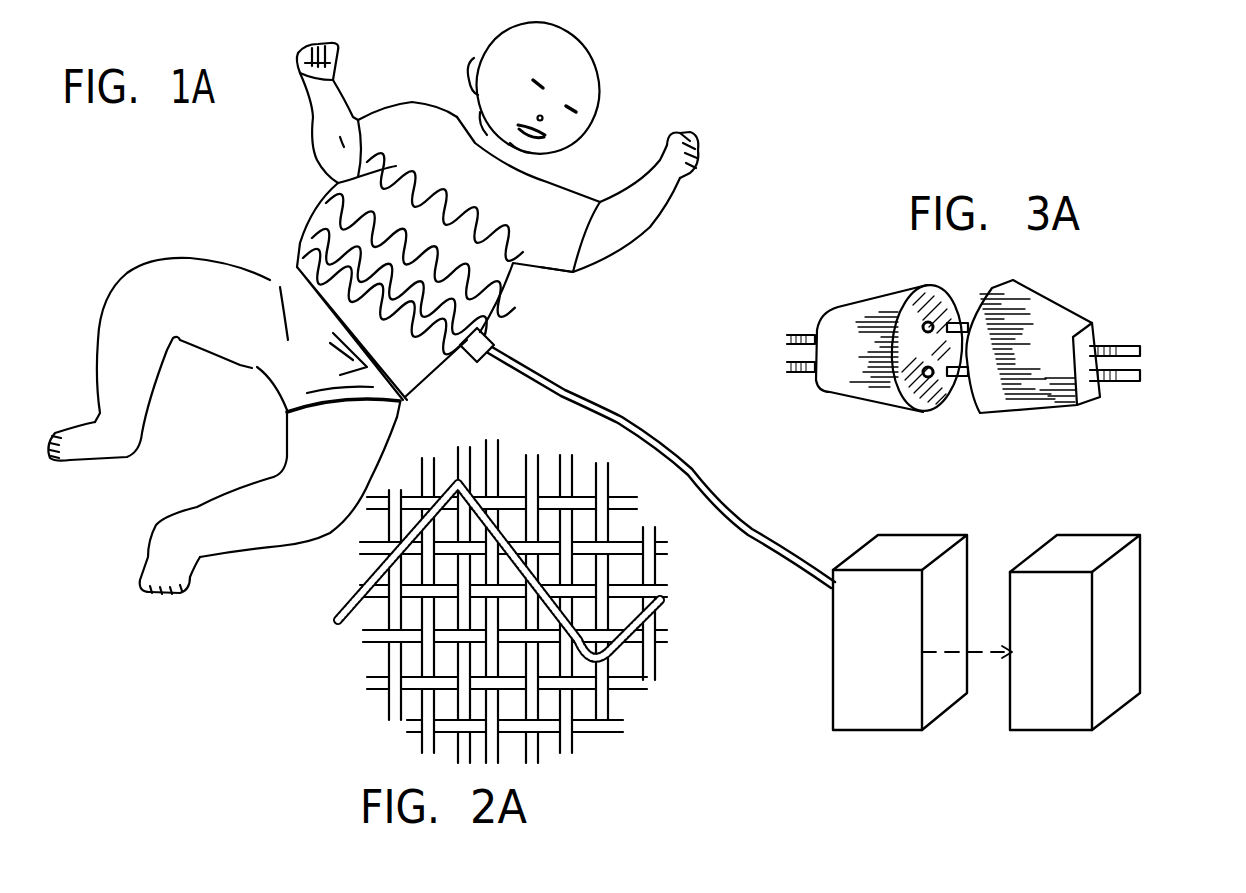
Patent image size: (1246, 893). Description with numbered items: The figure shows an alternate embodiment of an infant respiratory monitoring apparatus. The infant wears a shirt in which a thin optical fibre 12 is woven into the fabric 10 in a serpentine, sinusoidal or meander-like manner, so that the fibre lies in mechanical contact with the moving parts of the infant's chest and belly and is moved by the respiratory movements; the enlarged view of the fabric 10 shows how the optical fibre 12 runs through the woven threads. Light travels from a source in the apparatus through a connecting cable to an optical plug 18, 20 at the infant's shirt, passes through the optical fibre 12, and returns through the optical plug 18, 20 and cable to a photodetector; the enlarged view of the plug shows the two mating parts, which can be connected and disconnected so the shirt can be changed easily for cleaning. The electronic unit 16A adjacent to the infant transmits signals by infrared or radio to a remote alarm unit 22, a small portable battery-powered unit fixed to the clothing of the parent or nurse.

In FIG. 2A, the fabric 10 is at (640, 660).
In FIG. 1A, the optical fibre 12 is at (322, 218).
In FIG. 2A, the optical fibre 12 is at (368, 573).
In FIG. 1A, the electronic unit 16A is at (885, 705).
In FIG. 3A, the optical plug 18 is at (1055, 318).
In FIG. 3A, the optical plug 20 is at (937, 400).
In FIG. 1A, the remote alarm unit 22 is at (1053, 715).